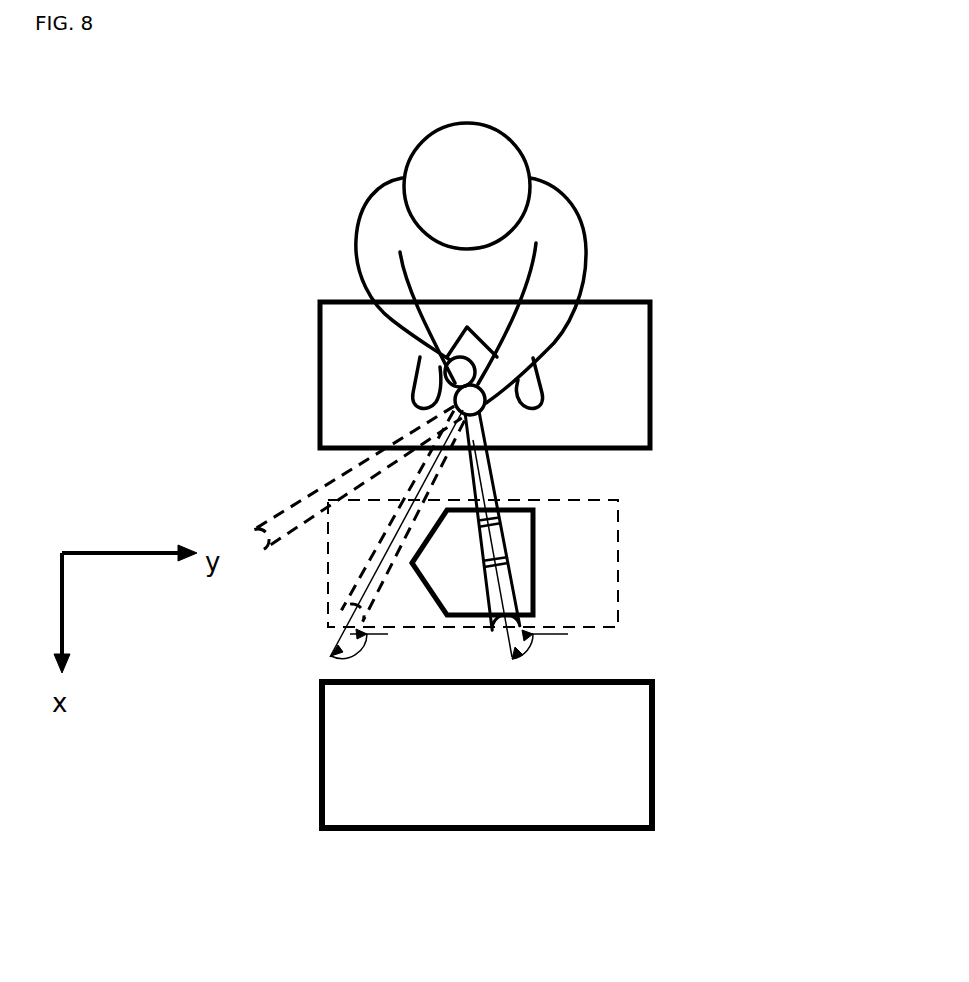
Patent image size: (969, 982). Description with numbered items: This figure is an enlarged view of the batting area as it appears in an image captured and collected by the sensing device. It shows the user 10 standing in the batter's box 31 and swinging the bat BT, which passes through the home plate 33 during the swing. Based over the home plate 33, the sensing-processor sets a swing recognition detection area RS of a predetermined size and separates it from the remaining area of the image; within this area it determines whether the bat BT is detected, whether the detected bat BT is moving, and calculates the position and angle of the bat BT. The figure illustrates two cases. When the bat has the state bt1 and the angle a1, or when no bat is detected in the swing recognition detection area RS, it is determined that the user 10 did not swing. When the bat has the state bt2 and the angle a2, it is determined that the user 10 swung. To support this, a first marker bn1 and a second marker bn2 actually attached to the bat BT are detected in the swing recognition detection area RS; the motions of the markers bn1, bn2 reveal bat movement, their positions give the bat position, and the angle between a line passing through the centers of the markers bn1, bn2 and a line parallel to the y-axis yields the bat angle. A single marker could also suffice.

The user 10 is at (598, 222).
The batter's box 31 is at (650, 347).
The home plate 33 is at (517, 592).
The swing recognition detection area RS is at (618, 537).
The bat BT is at (487, 448).
The first marker bn1 is at (497, 500).
The second marker bn2 is at (522, 598).
The bat state indicating no swing bt1 is at (340, 613).
The bat state indicating a swing bt2 is at (482, 600).
The bat angle for no-swing state a1 is at (363, 652).
The bat angle for swing state a2 is at (540, 653).